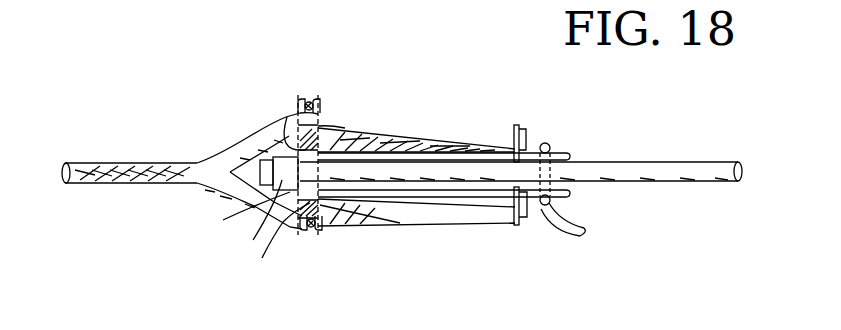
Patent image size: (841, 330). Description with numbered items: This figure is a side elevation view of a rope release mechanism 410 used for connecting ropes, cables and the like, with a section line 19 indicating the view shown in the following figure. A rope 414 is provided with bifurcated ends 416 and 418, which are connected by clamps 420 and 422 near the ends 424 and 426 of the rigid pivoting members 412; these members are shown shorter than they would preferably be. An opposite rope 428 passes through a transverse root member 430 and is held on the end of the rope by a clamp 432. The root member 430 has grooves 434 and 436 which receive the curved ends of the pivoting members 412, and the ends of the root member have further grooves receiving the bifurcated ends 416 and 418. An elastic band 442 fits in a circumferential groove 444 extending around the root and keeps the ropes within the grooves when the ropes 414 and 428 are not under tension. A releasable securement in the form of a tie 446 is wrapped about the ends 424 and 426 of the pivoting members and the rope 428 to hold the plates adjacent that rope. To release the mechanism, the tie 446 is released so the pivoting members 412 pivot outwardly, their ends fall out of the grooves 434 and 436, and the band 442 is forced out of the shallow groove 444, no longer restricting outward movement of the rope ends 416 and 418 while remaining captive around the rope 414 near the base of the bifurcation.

The rope 414 is at (128, 162).
The groove 436 is at (283, 116).
The clamp 432 is at (241, 202).
The transverse root member 430 is at (249, 209).
The groove 434 is at (264, 242).
The section line 19 is at (378, 80).
The rope release mechanism 410 is at (345, 142).
The bifurcated end 418 is at (447, 126).
The end of rigid pivoting member 426 is at (569, 151).
The opposite rope 428 is at (701, 163).
The clamp 422 is at (517, 125).
The end of rigid pivoting member 424 is at (571, 192).
The bifurcated end 416 is at (483, 222).
The rigid pivoting member 412 is at (405, 207).
The clamp 420 is at (522, 224).
The tie 446 is at (583, 236).
The elastic band 442 is at (310, 243).
The circumferential groove 444 is at (305, 238).